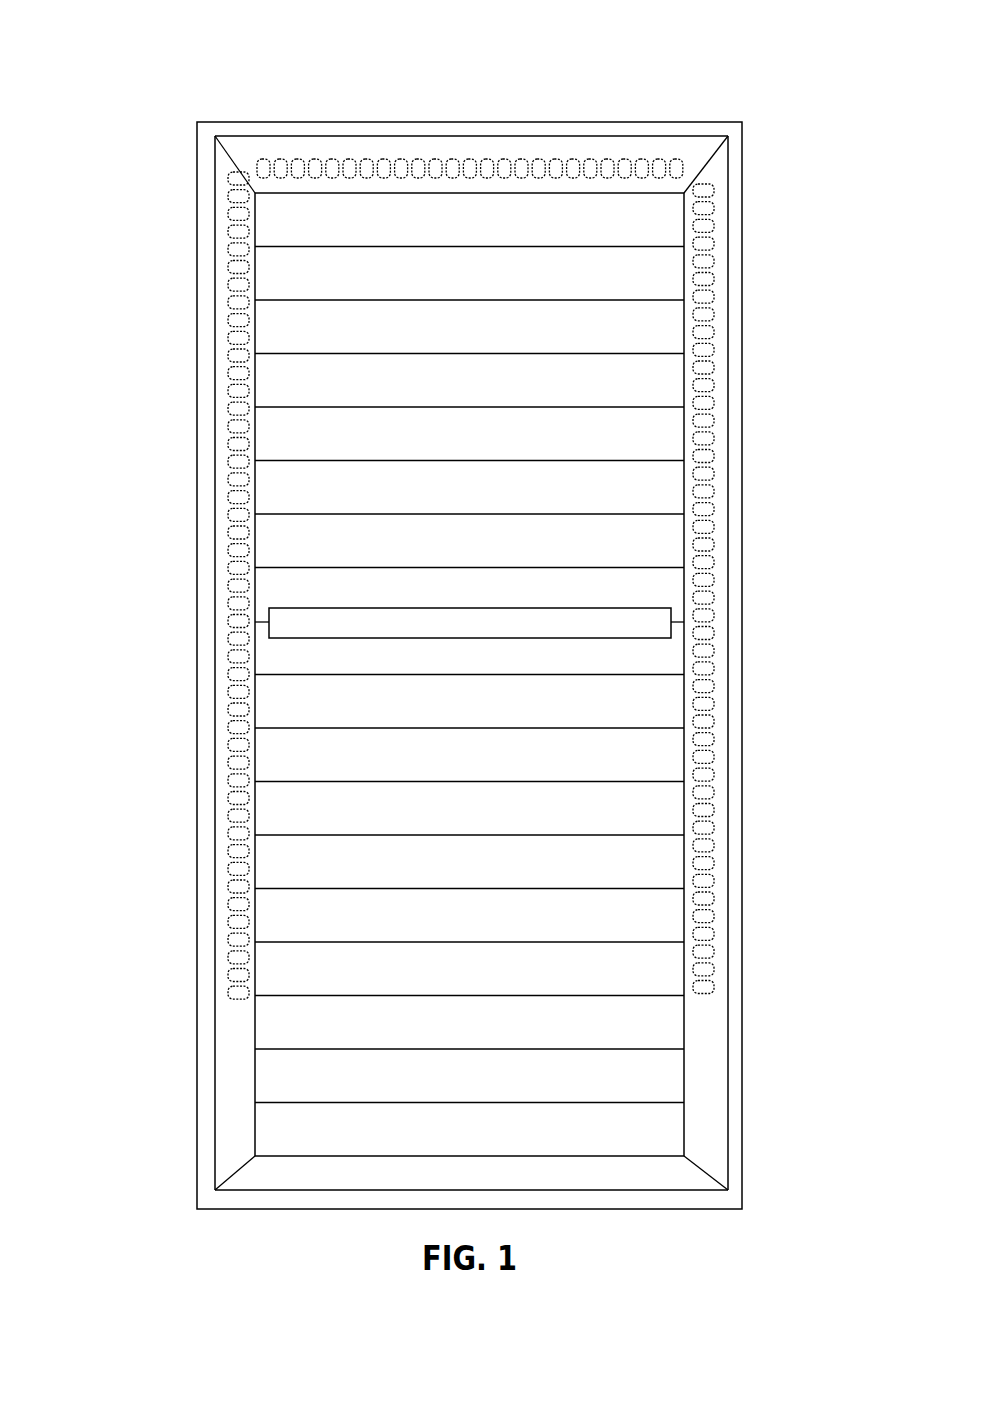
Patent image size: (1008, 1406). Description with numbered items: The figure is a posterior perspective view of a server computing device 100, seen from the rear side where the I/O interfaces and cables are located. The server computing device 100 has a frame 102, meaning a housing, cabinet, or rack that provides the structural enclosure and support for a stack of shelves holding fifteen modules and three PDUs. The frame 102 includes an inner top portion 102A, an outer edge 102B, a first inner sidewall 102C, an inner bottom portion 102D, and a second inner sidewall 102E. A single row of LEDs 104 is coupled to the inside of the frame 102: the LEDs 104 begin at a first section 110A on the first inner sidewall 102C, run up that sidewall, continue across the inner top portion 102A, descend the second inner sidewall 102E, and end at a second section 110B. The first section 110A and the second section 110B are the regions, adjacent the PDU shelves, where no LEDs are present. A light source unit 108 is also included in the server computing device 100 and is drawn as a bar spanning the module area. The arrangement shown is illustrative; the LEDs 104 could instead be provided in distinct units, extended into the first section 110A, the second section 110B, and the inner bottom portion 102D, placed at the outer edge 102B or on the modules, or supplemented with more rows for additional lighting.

The server computing device 100 is at (465, 645).
The frame 102 is at (728, 122).
The inner top portion 102A is at (497, 152).
The outer edge 102B is at (735, 310).
The first inner sidewall 102C is at (720, 408).
The inner bottom portion 102D is at (613, 1165).
The second inner sidewall 102E is at (222, 493).
The LEDs 104 is at (708, 455).
The light source unit 108 is at (670, 608).
The first section 110A is at (752, 995).
The second section 110B is at (178, 1010).